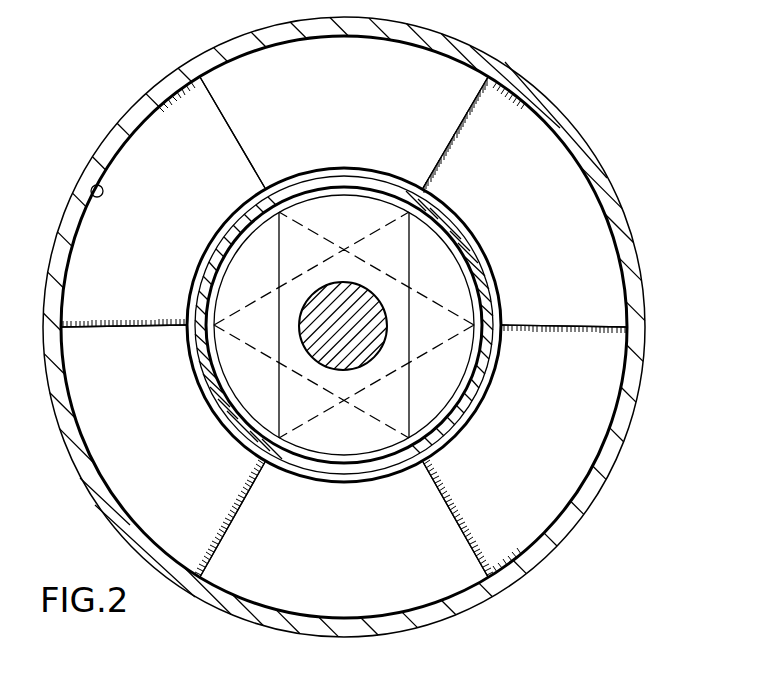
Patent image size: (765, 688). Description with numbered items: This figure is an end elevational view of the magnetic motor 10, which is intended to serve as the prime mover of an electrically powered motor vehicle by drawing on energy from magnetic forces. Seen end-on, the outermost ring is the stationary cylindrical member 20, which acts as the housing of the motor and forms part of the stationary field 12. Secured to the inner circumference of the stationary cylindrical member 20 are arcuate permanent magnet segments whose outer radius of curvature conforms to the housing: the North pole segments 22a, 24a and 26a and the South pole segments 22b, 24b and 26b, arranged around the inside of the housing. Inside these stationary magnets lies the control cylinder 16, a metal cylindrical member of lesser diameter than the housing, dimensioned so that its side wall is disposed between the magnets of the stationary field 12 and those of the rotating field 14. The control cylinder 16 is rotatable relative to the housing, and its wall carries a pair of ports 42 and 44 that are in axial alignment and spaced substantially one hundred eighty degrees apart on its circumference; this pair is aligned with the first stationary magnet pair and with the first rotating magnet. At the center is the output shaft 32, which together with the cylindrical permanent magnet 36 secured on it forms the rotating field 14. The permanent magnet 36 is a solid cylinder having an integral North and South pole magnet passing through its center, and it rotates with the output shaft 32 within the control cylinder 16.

The magnetic motor 10 is at (578, 120).
The stationary field 12 is at (640, 246).
The rotating field 14 is at (322, 190).
The control cylinder 16 is at (200, 375).
The stationary cylindrical member 20 is at (93, 186).
The North pole segment 22a is at (362, 567).
The South pole segment 22b is at (361, 108).
The North pole segment 24a is at (552, 222).
The South pole segment 24b is at (163, 448).
The North pole segment 26a is at (182, 222).
The South pole segment 26b is at (554, 436).
The output shaft 32 is at (372, 368).
The permanent magnet 36 is at (333, 461).
The port 42 is at (415, 196).
The port 44 is at (413, 456).